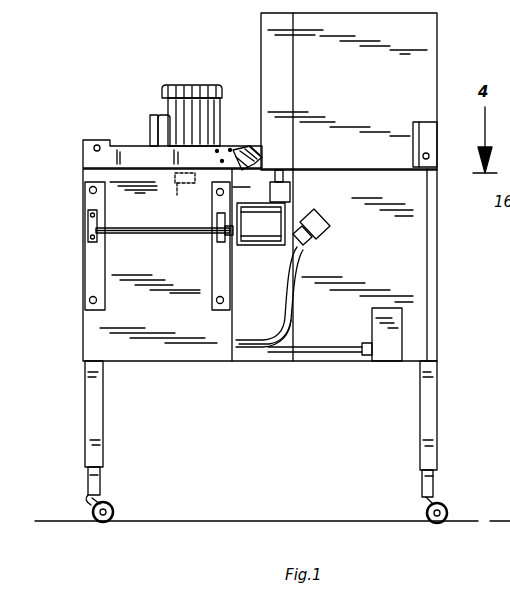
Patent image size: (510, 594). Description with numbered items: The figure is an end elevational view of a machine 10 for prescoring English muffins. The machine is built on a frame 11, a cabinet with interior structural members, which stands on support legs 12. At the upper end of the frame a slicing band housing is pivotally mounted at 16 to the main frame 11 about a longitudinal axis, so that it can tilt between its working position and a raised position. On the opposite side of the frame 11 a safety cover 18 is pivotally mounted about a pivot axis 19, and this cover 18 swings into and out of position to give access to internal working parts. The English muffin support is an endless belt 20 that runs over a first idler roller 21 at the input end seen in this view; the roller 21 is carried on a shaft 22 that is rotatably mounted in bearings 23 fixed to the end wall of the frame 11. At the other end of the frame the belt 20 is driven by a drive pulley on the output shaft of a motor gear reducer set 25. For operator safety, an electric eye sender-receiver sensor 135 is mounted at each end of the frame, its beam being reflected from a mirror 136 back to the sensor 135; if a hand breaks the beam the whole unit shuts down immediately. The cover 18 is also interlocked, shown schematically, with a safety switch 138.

The machine 10 is at (72, 332).
The frame 11 is at (168, 350).
The support legs 12 is at (98, 428).
The pivot mounting 16 is at (437, 167).
The safety cover 18 is at (127, 153).
The pivot axis 19 is at (97, 145).
The endless belt 20 is at (268, 218).
The first idler roller 21 is at (240, 250).
The shaft 22 is at (140, 237).
The bearings 23 is at (98, 222).
The motor gear reducer set 25 is at (163, 85).
The electric eye sender-receiver sensor 135 is at (321, 232).
The mirror 136 is at (238, 147).
The safety switch 138 is at (181, 186).